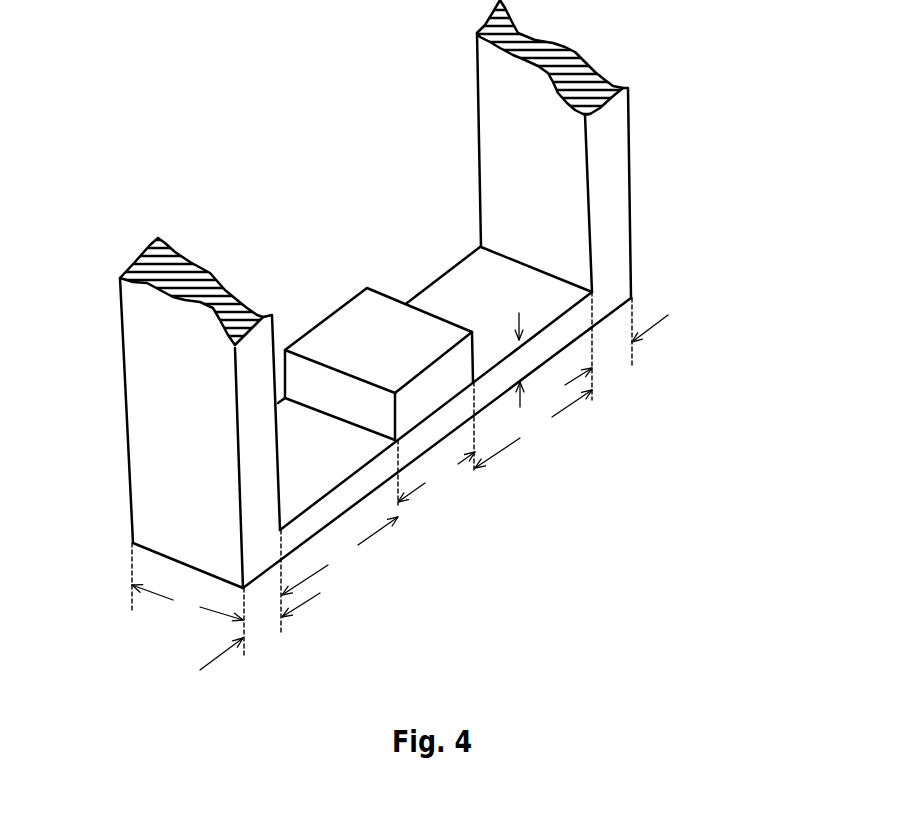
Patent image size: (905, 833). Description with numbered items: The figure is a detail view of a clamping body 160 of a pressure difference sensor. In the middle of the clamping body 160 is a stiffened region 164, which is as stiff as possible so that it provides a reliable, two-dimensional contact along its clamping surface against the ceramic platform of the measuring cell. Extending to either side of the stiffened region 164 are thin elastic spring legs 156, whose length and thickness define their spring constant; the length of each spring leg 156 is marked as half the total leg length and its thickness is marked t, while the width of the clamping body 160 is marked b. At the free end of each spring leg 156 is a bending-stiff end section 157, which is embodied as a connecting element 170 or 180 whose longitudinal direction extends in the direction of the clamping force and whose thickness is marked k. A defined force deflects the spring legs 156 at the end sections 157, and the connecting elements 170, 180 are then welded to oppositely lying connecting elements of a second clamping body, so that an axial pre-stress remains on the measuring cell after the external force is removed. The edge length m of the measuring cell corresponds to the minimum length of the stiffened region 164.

The clamping body 160 is at (177, 183).
The connecting element 170 is at (140, 392).
The connecting element 180 is at (627, 167).
The stiffened region 164 is at (435, 400).
The spring leg 156 is at (337, 500).
The end section 157 is at (267, 558).